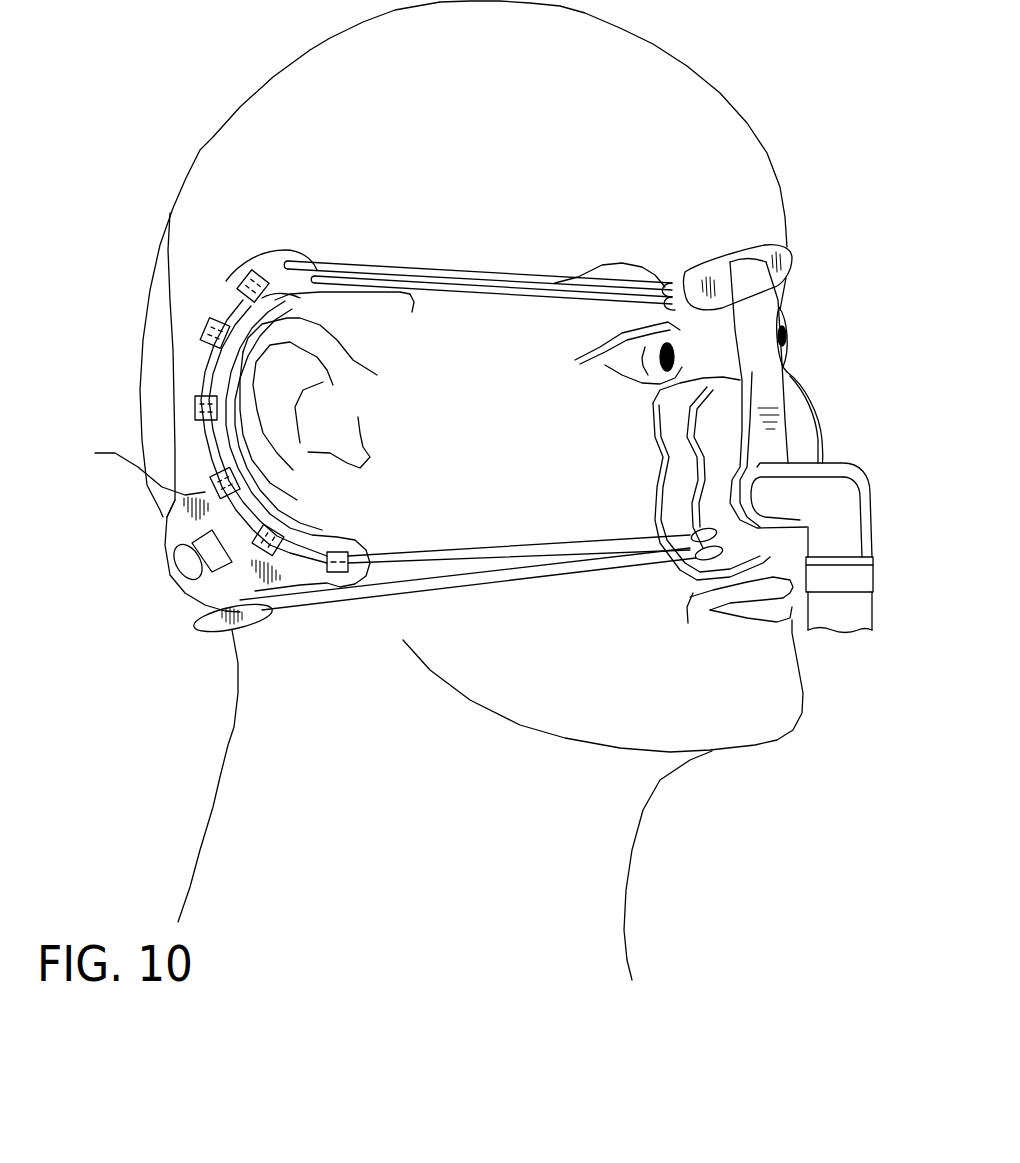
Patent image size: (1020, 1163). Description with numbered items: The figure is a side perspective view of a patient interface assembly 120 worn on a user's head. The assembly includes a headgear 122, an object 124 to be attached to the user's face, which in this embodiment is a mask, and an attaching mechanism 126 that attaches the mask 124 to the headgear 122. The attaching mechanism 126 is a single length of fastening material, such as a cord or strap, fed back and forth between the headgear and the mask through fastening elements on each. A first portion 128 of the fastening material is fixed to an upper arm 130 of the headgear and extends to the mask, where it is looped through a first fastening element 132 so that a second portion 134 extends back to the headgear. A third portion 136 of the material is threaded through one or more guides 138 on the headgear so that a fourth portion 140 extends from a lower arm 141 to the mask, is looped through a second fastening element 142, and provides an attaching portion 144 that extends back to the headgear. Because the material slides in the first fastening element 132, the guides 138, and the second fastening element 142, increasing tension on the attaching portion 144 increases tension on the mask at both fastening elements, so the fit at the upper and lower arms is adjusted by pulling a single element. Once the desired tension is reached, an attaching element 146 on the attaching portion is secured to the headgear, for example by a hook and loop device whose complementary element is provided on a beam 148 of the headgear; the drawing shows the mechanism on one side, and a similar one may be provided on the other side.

The patient interface assembly 120 is at (108, 340).
The headgear 122 is at (168, 311).
The object to be attached to the user's face (mask) 124 is at (804, 170).
The attaching mechanism 126 is at (479, 239).
The first portion of the fastening material 128 is at (425, 268).
The upper arm 130 is at (273, 247).
The first fastening element 132 is at (655, 270).
The second portion of the fastening material 134 is at (420, 297).
The third portion of the fastening material 136 is at (200, 380).
The guides 138 is at (240, 284).
The fourth portion of the fastening material 140 is at (483, 547).
The lower arm 141 is at (317, 583).
The second fastening element 142 is at (660, 577).
The attaching portion 144 is at (440, 590).
The attaching element 146 is at (200, 630).
The beam 148 is at (170, 572).